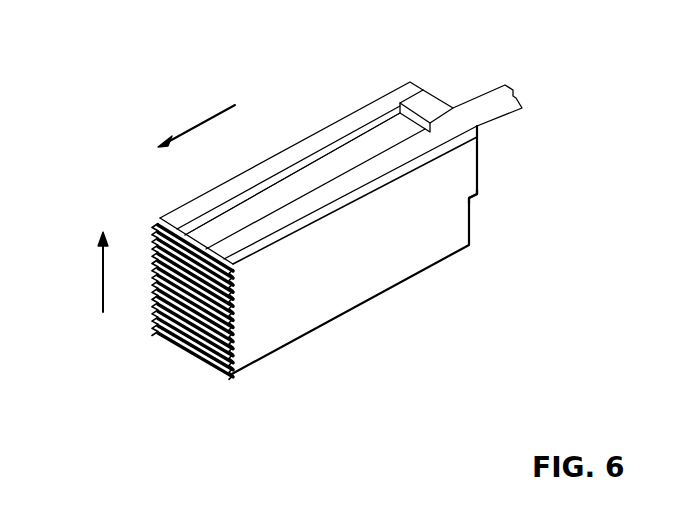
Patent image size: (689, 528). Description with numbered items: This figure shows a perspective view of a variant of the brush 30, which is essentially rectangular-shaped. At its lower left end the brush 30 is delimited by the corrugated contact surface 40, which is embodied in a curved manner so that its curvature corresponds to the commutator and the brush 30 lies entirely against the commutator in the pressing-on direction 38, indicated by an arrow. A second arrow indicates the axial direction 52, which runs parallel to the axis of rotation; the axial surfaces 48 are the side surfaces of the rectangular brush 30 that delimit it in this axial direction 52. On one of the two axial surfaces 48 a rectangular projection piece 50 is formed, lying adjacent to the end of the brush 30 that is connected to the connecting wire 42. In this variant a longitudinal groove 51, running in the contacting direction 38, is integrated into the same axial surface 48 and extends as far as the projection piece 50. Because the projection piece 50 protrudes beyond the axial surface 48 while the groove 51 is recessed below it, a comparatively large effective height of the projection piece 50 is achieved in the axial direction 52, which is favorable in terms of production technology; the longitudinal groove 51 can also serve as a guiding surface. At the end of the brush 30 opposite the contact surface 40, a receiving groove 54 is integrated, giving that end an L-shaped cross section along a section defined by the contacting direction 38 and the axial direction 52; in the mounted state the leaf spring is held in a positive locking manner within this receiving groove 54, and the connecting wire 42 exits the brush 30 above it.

The brush 30 is at (348, 287).
The pressing-on direction 38 is at (197, 122).
The contact surface 40 is at (187, 328).
The connecting wire 42 is at (493, 115).
The axial surfaces 48 is at (346, 124).
The projection piece 50 is at (432, 103).
The longitudinal groove 51 is at (293, 192).
The axial direction 52 is at (100, 272).
The receiving groove 54 is at (469, 213).